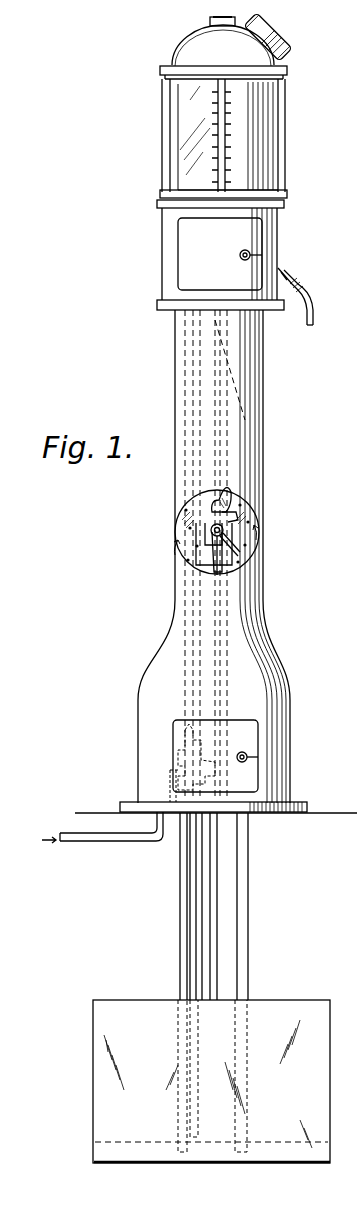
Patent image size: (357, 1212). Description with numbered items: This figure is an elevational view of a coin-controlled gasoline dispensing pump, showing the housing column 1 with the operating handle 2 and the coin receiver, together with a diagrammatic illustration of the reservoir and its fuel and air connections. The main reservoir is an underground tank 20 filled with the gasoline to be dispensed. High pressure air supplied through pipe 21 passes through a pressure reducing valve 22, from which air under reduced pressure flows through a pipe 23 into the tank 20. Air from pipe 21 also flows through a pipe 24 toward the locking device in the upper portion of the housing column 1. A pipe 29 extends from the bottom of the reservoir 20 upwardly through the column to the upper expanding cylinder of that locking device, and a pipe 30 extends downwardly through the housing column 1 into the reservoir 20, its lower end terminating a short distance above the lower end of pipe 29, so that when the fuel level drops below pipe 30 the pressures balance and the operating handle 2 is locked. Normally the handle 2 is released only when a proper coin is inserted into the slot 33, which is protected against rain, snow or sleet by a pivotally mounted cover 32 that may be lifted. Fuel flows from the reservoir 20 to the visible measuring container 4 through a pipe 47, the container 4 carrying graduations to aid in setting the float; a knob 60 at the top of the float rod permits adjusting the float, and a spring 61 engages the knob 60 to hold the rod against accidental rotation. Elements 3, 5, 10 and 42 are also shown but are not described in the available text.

The housing column 1 is at (282, 664).
The operating handle 2 is at (255, 562).
The operating lever mechanism 3 is at (248, 530).
The measuring container 4 is at (180, 152).
The graduated scale 5 is at (240, 143).
The discharge hose nozzle 10 is at (304, 296).
The underground tank 20 is at (93, 1086).
The pipe 21 is at (90, 845).
The pressure reducing valve 22 is at (175, 757).
The pipe 23 is at (217, 877).
The pipe 24 is at (213, 698).
The pipe 29 is at (180, 919).
The pipe 30 is at (188, 1047).
The pivotally mounted cover 32 is at (220, 487).
The slot 33 is at (240, 514).
The link 42 is at (240, 548).
The pipe 47 is at (249, 951).
The knob 60 is at (188, 45).
The spring 61 is at (284, 30).